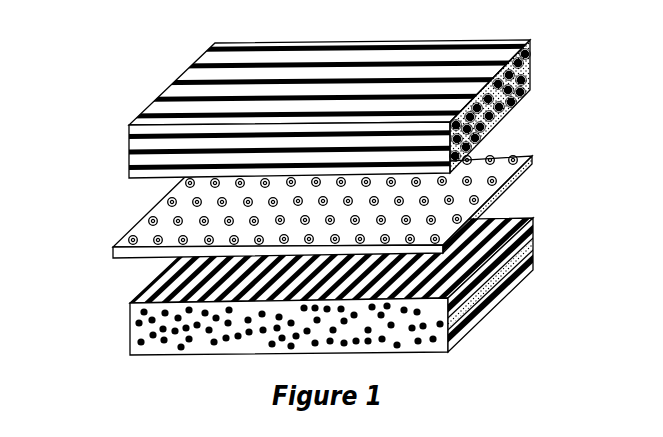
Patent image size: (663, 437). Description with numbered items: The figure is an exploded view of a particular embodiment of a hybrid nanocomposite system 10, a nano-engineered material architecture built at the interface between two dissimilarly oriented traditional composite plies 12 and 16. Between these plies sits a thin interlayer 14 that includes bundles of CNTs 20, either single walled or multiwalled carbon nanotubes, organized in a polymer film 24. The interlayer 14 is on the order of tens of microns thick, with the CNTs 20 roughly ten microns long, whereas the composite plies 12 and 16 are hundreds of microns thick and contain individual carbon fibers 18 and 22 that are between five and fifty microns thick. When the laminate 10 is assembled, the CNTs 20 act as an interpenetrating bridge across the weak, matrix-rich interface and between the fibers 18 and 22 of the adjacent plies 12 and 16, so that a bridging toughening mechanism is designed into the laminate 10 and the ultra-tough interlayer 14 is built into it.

The hybrid nanocomposite system 10 is at (330, 182).
The traditional composite ply 12 is at (330, 261).
The thin interlayer 14 is at (334, 184).
The traditional composite ply 16 is at (333, 93).
The carbon fibers 18 is at (292, 81).
The CNTs 20 is at (277, 200).
The carbon fibers 22 is at (322, 261).
The polymer film 24 is at (246, 143).